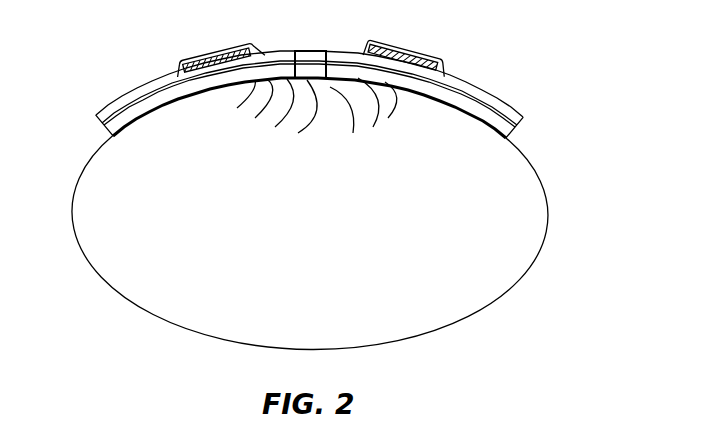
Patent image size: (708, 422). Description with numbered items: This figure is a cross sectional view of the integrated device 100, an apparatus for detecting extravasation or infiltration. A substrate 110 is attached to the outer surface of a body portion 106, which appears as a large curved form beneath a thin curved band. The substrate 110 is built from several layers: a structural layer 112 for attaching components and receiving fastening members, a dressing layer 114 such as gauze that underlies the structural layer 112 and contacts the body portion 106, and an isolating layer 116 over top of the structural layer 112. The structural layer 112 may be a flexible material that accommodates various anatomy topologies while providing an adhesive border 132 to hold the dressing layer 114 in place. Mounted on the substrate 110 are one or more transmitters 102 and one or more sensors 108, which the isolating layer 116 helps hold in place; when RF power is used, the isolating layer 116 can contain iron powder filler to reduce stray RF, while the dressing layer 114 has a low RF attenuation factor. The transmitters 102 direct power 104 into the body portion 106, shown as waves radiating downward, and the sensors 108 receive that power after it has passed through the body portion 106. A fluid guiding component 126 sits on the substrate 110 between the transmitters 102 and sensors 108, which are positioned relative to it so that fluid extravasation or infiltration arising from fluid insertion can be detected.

The integrated device 100 is at (103, 57).
The transmitter 102 is at (223, 50).
The power 104 is at (320, 125).
The body portion 106 is at (549, 215).
The sensor 108 is at (428, 64).
The substrate 110 is at (117, 102).
The structural layer 112 is at (524, 121).
The dressing layer 114 is at (516, 133).
The isolating layer 116 is at (489, 95).
The fluid guiding component 126 is at (298, 52).
The adhesive border 132 is at (478, 124).